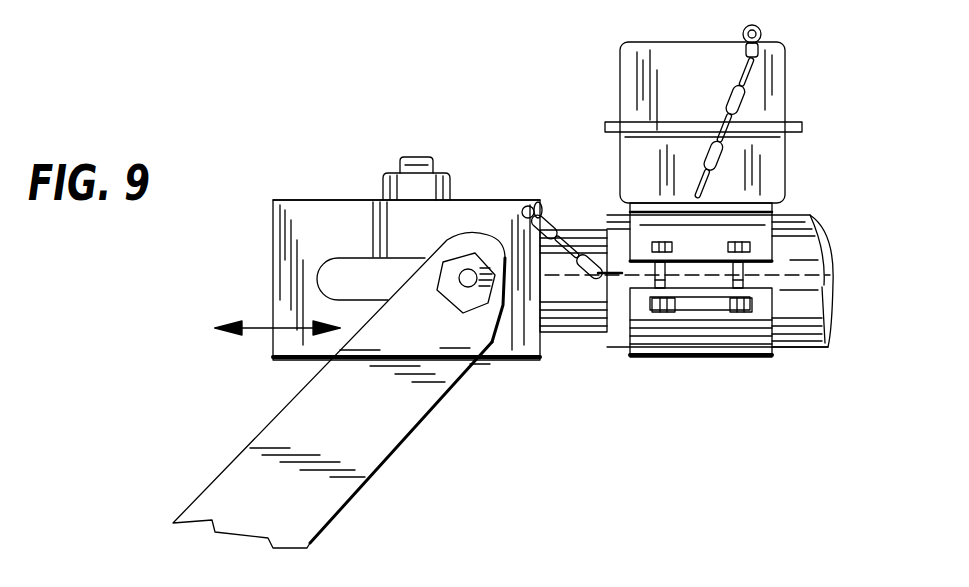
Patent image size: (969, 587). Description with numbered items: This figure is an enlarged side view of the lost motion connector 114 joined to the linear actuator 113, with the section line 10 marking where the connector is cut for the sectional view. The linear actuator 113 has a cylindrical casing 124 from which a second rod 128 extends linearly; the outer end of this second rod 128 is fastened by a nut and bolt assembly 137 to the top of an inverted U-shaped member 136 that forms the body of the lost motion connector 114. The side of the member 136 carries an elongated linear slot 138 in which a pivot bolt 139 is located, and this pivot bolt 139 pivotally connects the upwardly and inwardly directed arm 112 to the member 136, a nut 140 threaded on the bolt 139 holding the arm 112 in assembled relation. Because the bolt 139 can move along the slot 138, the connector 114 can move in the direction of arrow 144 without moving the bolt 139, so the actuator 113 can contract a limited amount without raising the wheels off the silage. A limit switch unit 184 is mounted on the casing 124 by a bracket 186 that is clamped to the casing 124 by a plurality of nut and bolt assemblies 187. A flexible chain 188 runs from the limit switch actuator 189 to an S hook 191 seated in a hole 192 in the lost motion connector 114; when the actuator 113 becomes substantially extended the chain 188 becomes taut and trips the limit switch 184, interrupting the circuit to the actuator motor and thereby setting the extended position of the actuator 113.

The section line for FIG. 10 is at (468, 125).
The arm 112 is at (417, 402).
The linear actuator 113 is at (810, 327).
The lost motion connector 114 is at (295, 200).
The cylindrical casing 124 is at (815, 272).
The second rod 128 is at (581, 234).
The inverted U-shaped member 136 is at (338, 213).
The nut and bolt assembly 137 is at (447, 173).
The elongated linear slot 138 is at (395, 262).
The pivot bolt 139 is at (466, 280).
The nut 140 is at (466, 309).
The arrow 144 is at (317, 322).
The limit switch unit 184 is at (695, 62).
The bracket 186 is at (753, 222).
The nut and bolt assemblies 187 is at (743, 312).
The chain 188 is at (748, 100).
The limit switch actuator 189 is at (763, 32).
The S hook 191 is at (540, 205).
The hole 192 is at (522, 213).